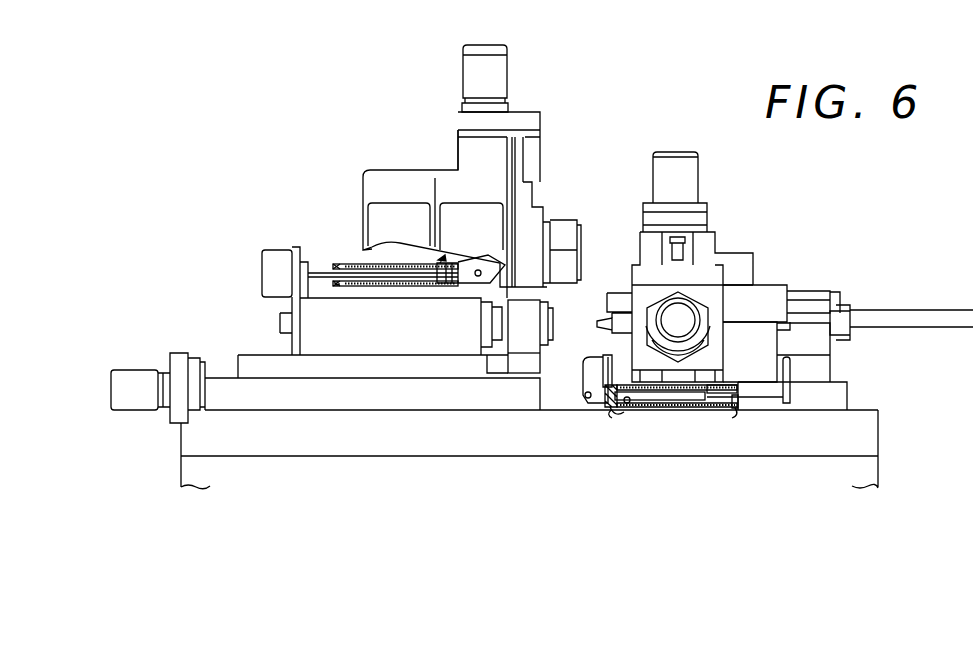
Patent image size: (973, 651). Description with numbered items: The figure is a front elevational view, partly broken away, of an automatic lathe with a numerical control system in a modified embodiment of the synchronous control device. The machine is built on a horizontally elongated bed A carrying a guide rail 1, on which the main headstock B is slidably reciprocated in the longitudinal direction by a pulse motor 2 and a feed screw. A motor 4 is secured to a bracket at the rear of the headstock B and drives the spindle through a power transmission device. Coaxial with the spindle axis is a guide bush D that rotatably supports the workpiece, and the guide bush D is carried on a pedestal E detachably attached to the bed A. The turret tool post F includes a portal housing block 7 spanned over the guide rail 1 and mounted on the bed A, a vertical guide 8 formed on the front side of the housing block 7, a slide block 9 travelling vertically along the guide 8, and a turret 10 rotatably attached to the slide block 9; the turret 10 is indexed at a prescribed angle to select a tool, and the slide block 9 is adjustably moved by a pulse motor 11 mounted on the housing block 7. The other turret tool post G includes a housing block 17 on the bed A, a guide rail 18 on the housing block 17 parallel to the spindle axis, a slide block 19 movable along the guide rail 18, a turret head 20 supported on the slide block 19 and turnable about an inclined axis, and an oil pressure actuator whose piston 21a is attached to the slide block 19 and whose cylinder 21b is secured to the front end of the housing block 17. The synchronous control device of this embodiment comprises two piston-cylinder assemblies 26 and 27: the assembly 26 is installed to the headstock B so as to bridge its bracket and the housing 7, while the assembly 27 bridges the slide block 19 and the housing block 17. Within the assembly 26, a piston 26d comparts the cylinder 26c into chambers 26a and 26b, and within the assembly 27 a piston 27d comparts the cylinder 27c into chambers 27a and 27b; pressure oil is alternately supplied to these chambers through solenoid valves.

The guide rail 1 is at (566, 407).
The pulse motor 2 is at (133, 372).
The motor 4 is at (263, 285).
The portal housing block 7 is at (383, 178).
The vertical guide 8 is at (523, 160).
The slide block 9 is at (531, 195).
The turret 10 is at (572, 227).
The pulse motor 11 is at (498, 79).
The housing block 17 is at (832, 368).
The guide rail 18 is at (790, 332).
The slide block 19 is at (778, 286).
The turret head 20 is at (712, 312).
The piston 21a is at (843, 338).
The cylinder 21b is at (922, 328).
The piston-cylinder assembly 26 is at (376, 298).
The chamber 26a is at (353, 288).
The chamber 26b is at (463, 263).
The cylinder 26c is at (396, 288).
The piston 26d is at (440, 264).
The piston-cylinder assembly 27 is at (672, 412).
The chamber 27a is at (736, 410).
The chamber 27b is at (626, 408).
The cylinder 27c is at (712, 408).
The piston 27d is at (717, 390).
The bed A is at (880, 443).
The main headstock B is at (392, 354).
The guide bush D is at (552, 310).
The pedestal E is at (536, 353).
The turret tool post F is at (349, 157).
The turret tool post G is at (766, 211).